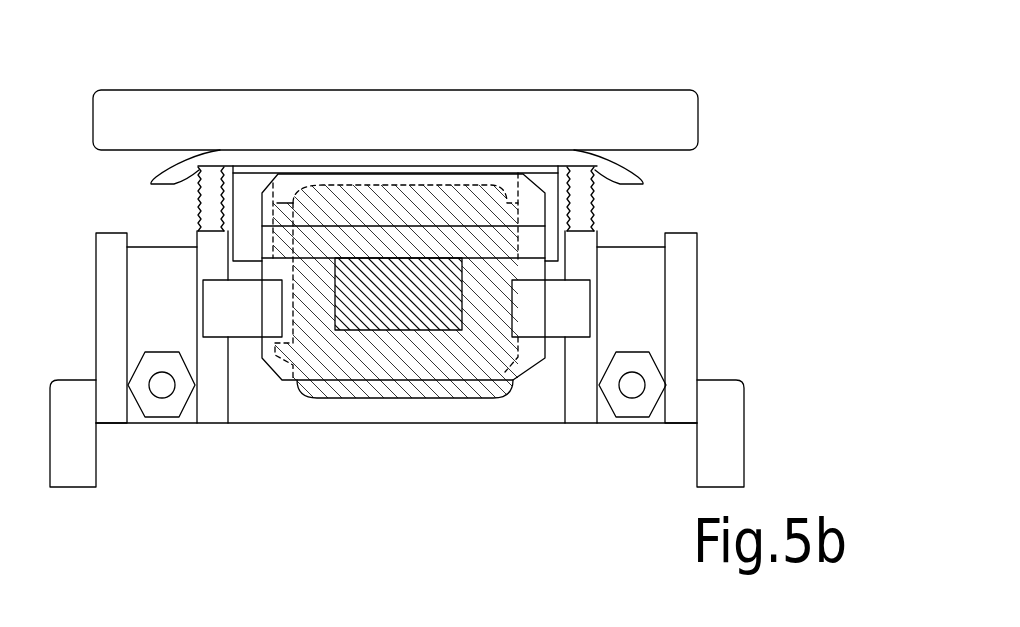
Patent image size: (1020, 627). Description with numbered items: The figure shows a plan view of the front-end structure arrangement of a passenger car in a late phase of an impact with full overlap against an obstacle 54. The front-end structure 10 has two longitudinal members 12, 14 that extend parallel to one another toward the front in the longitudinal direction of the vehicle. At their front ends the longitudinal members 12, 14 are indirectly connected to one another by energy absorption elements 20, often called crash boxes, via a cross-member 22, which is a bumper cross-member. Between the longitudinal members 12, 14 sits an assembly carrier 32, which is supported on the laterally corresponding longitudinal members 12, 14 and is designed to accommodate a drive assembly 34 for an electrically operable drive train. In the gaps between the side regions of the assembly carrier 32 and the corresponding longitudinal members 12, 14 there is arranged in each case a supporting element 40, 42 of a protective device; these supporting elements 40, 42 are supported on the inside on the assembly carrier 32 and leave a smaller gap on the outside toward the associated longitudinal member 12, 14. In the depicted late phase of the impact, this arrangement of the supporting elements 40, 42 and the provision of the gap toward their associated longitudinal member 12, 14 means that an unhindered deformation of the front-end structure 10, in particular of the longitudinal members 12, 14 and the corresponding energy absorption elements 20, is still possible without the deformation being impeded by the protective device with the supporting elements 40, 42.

The front-end structure 10 is at (735, 151).
The longitudinal member 12 is at (210, 347).
The longitudinal member 14 is at (582, 348).
The energy absorption element 20 is at (197, 205).
The cross-member 22 is at (248, 162).
The assembly carrier 32 is at (517, 380).
The drive assembly 34 is at (390, 399).
The supporting element 40 is at (242, 245).
The supporting element 42 is at (553, 240).
The obstacle 54 is at (398, 108).